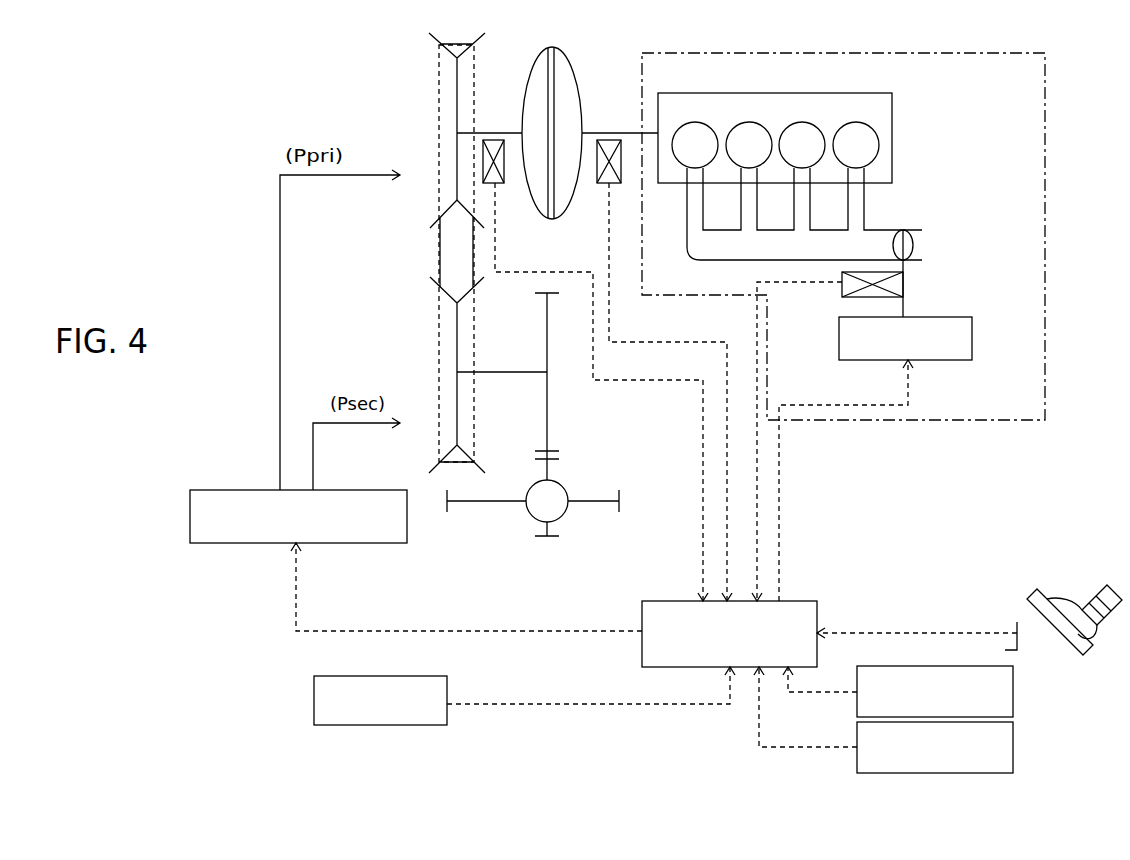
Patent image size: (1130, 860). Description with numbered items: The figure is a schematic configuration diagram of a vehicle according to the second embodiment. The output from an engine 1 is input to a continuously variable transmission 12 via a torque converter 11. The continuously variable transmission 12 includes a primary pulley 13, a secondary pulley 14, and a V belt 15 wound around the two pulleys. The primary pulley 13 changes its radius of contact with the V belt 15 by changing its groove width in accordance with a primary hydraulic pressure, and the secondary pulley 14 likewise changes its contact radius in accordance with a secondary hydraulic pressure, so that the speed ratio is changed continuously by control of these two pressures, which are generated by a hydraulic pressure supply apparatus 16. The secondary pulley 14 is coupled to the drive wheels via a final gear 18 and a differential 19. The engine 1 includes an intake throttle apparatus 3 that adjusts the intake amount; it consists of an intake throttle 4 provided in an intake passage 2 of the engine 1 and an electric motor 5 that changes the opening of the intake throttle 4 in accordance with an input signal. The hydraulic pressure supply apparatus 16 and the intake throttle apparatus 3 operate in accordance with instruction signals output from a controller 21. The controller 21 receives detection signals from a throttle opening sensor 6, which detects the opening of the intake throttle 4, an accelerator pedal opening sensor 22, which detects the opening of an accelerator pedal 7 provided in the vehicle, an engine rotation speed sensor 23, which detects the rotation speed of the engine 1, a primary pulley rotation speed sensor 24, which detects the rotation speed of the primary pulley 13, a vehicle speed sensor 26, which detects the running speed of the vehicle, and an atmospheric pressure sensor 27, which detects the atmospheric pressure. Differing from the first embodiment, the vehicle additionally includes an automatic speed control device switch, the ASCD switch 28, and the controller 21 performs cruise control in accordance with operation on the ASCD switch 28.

The engine 1 is at (962, 50).
The intake passage 2 is at (885, 230).
The intake throttle apparatus 3 is at (925, 293).
The intake throttle 4 is at (916, 243).
The electric motor 5 is at (975, 325).
The throttle opening sensor 6 is at (840, 288).
The accelerator pedal 7 is at (1040, 590).
The torque converter 11 is at (577, 62).
The continuously variable transmission 12 is at (371, 119).
The primary pulley 13 is at (438, 42).
The secondary pulley 14 is at (437, 283).
The V belt 15 is at (438, 245).
The hydraulic pressure supply apparatus 16 is at (228, 490).
The final gear 18 is at (550, 430).
The differential 19 is at (566, 491).
The controller 21 is at (817, 608).
The accelerator pedal opening sensor 22 is at (1017, 625).
The engine rotation speed sensor 23 is at (611, 183).
The primary pulley rotation speed sensor 24 is at (500, 183).
The vehicle speed sensor 26 is at (313, 695).
The atmospheric pressure sensor 27 is at (1015, 700).
The ASCD switch 28 is at (1015, 755).